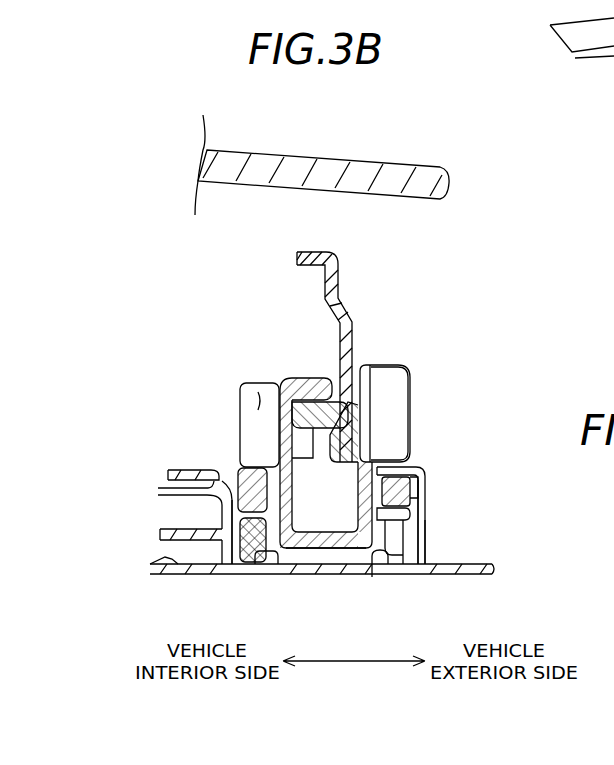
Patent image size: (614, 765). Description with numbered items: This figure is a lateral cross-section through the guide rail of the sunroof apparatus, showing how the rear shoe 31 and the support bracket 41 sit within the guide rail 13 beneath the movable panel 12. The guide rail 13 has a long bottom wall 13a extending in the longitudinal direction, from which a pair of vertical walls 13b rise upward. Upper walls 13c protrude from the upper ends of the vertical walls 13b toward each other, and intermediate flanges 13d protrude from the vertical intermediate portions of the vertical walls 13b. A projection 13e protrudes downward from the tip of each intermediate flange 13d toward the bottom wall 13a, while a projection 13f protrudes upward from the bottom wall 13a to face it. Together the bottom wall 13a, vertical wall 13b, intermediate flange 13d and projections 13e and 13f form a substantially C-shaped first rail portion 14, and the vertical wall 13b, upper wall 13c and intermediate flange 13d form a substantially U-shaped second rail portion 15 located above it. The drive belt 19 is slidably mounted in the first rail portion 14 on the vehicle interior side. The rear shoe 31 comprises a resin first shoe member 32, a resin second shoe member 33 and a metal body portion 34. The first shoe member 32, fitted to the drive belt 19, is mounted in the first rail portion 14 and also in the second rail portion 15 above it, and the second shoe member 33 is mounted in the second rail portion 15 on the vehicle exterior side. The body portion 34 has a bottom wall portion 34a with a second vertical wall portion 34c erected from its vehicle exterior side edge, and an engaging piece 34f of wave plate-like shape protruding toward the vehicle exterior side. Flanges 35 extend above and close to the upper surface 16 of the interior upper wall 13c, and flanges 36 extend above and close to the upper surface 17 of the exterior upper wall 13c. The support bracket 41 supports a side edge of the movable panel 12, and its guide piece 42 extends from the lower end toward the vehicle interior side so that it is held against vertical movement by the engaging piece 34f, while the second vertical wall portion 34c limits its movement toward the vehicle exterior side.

The movable panel 12 is at (448, 186).
The guide rail 13 is at (324, 523).
The bottom wall 13a is at (298, 577).
The vertical wall 13b is at (200, 532).
The upper wall 13c is at (237, 452).
The intermediate flange 13d is at (183, 478).
The projection 13e is at (392, 577).
The projection 13f is at (374, 578).
The first rail portion 14 is at (250, 570).
The second rail portion 15 is at (240, 470).
The upper surface 16 is at (250, 430).
The upper surface 17 is at (420, 458).
The drive belt 19 is at (165, 562).
The rear shoe 31 is at (404, 367).
The first shoe member 32 is at (268, 575).
The second shoe member 33 is at (415, 506).
The body portion 34 is at (287, 378).
The bottom wall portion 34a is at (340, 560).
The second vertical wall portion 34c is at (383, 416).
The engaging piece 34f is at (323, 376).
The flange 35 is at (257, 395).
The flange 36 is at (409, 376).
The support bracket 41 is at (353, 322).
The guide piece 42 is at (297, 378).